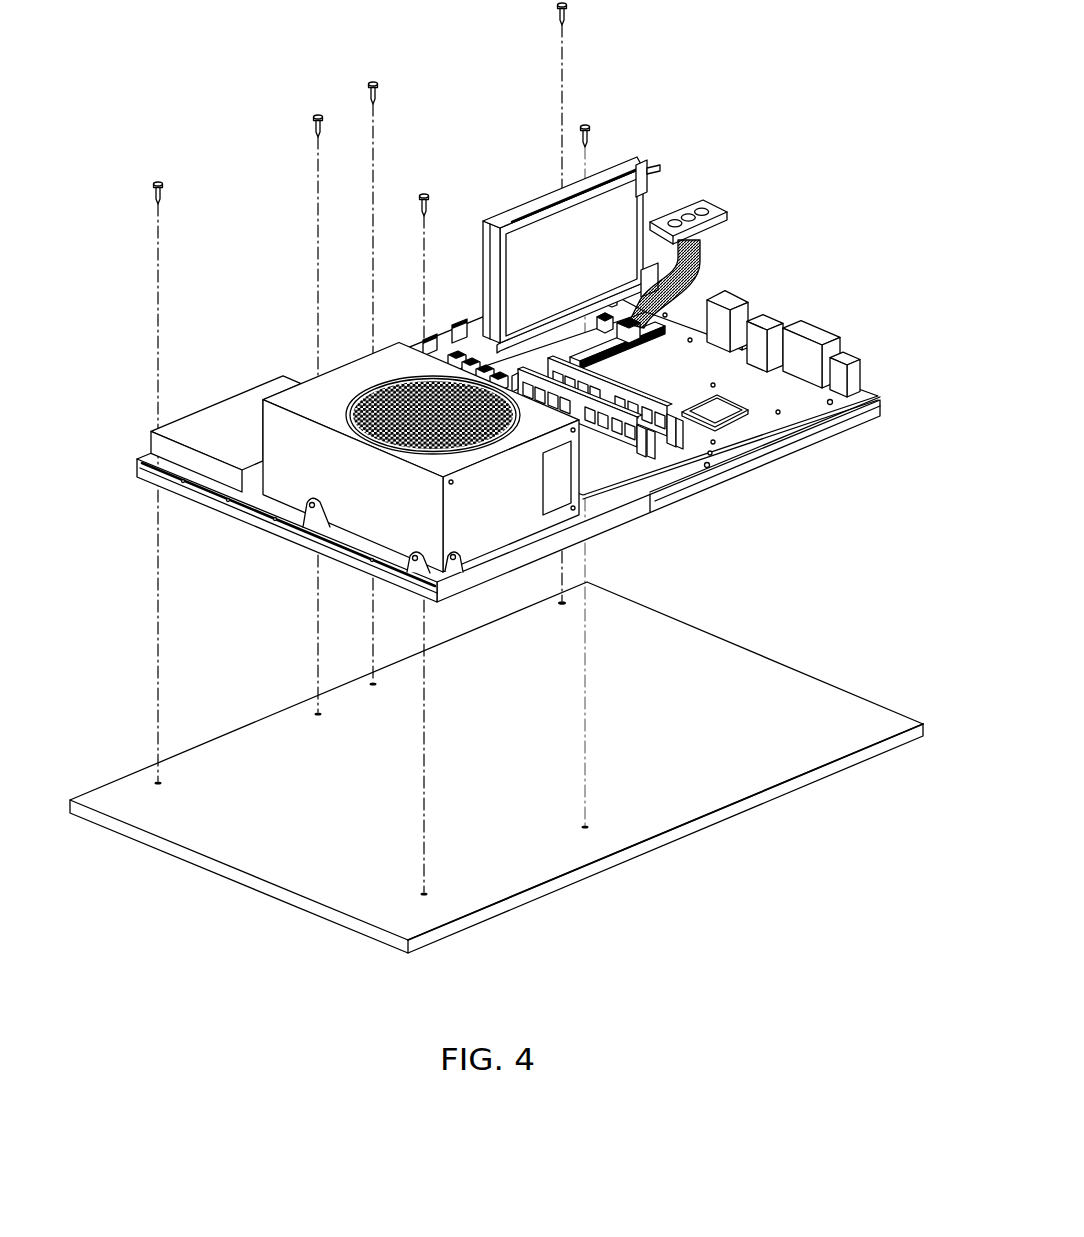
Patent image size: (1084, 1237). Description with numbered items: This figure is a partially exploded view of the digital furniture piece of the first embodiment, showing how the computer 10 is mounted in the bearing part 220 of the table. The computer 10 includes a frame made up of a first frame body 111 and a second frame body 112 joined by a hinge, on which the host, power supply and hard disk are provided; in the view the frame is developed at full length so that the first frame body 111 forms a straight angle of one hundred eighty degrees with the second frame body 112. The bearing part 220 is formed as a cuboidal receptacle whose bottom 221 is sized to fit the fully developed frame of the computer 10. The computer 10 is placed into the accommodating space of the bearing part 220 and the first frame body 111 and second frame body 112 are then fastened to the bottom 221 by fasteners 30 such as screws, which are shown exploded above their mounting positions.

The computer 10 is at (800, 266).
The fasteners 30 is at (567, 12).
The first frame body 111 is at (296, 532).
The second frame body 112 is at (752, 463).
The bearing part 220 is at (496, 767).
The bottom 221 is at (568, 880).